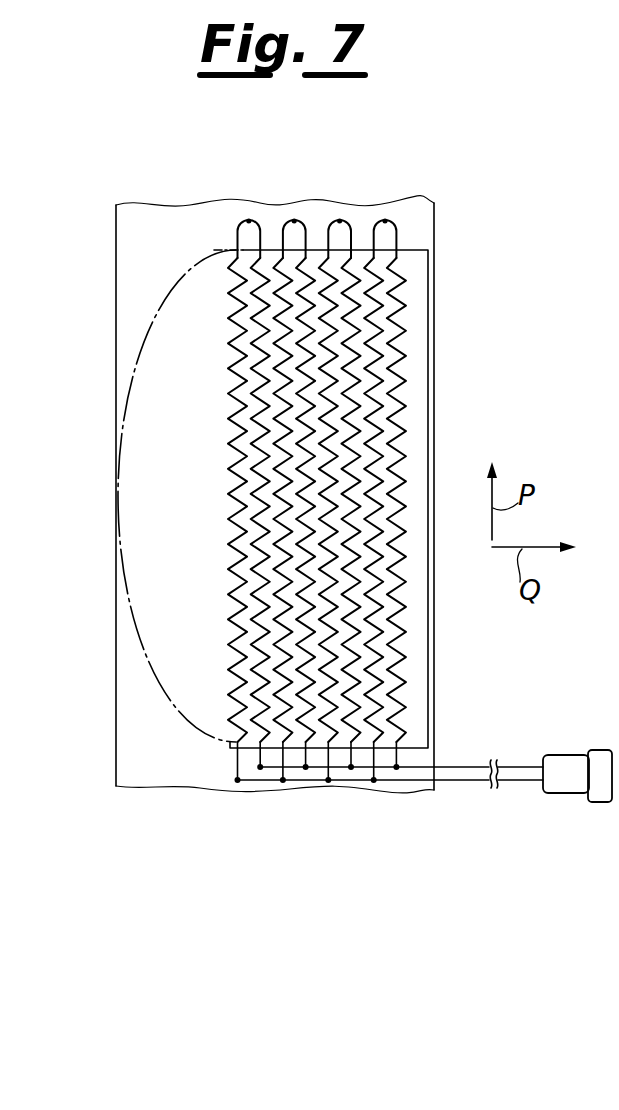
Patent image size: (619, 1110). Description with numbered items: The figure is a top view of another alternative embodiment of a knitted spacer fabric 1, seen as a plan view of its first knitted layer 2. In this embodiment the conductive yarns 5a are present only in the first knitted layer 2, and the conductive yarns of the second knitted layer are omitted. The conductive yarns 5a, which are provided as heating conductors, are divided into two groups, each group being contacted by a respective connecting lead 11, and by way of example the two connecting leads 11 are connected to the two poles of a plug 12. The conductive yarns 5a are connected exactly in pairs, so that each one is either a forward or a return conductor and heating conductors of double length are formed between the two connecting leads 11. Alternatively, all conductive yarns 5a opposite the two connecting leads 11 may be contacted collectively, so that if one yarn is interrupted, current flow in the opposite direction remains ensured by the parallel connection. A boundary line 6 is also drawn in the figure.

The knitted spacer fabric 1 is at (110, 731).
The first knitted layer 2 is at (165, 360).
The contour line 6 is at (200, 258).
The conductive yarns 5a is at (385, 390).
The connecting lead 11 is at (453, 782).
The plug 12 is at (573, 790).